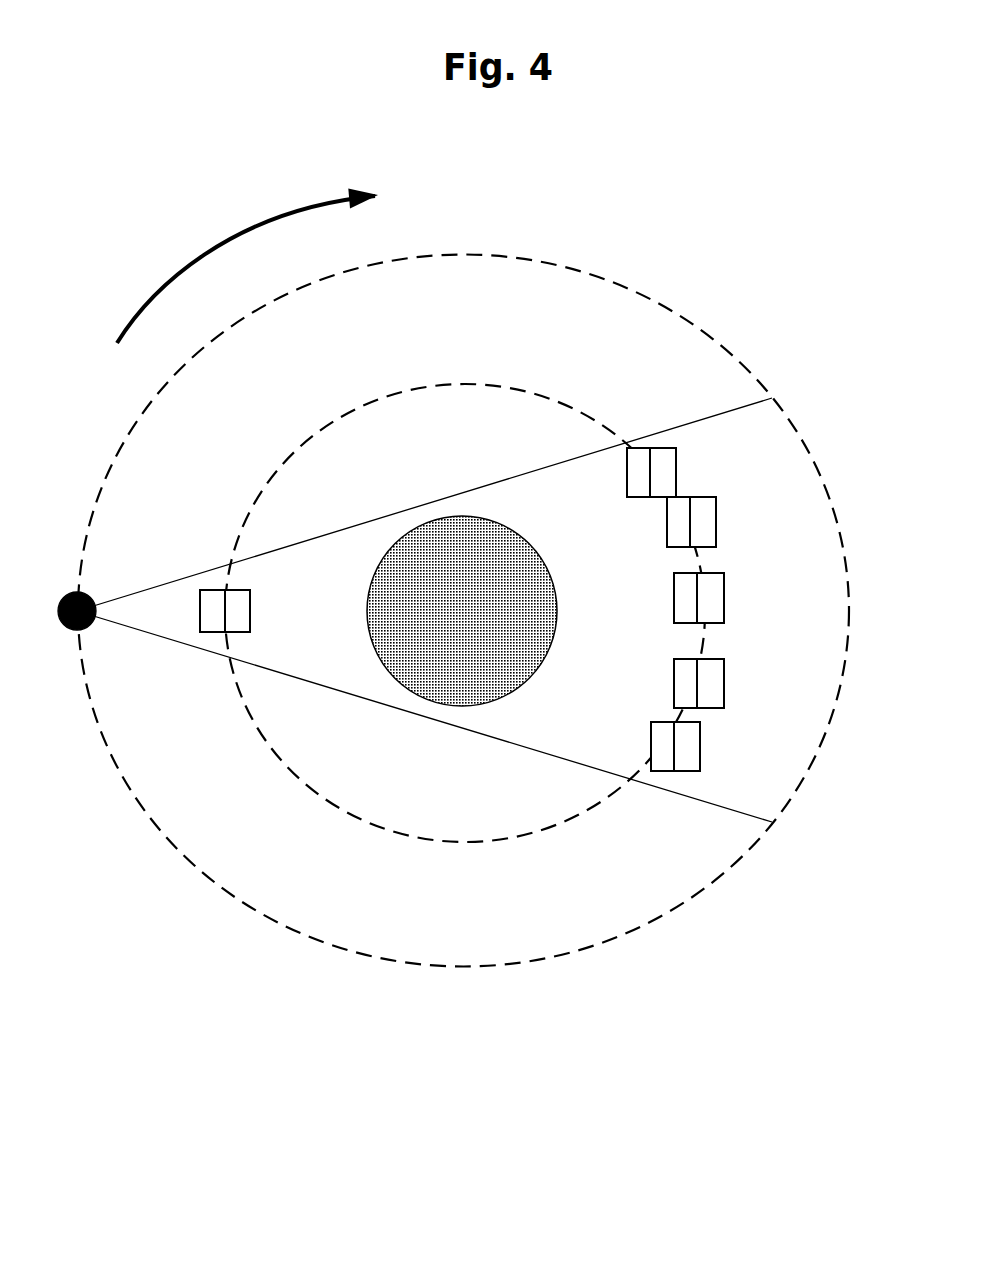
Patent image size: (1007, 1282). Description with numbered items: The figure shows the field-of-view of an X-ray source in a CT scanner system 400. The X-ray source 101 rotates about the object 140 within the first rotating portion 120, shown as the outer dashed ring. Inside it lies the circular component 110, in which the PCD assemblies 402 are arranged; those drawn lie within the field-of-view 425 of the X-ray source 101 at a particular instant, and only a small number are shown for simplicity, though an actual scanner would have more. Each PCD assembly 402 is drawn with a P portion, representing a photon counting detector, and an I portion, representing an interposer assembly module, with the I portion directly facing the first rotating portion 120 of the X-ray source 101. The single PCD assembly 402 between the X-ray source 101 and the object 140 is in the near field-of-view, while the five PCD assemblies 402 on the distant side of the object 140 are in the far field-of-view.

The CT scanner system 400 is at (366, 108).
The X-ray source 101 is at (75, 630).
The circular component 110 is at (326, 806).
The first rotating portion 120 is at (437, 967).
The object 140 is at (557, 648).
The PCD assembly 402 is at (227, 587).
The field-of-view 425 is at (652, 438).